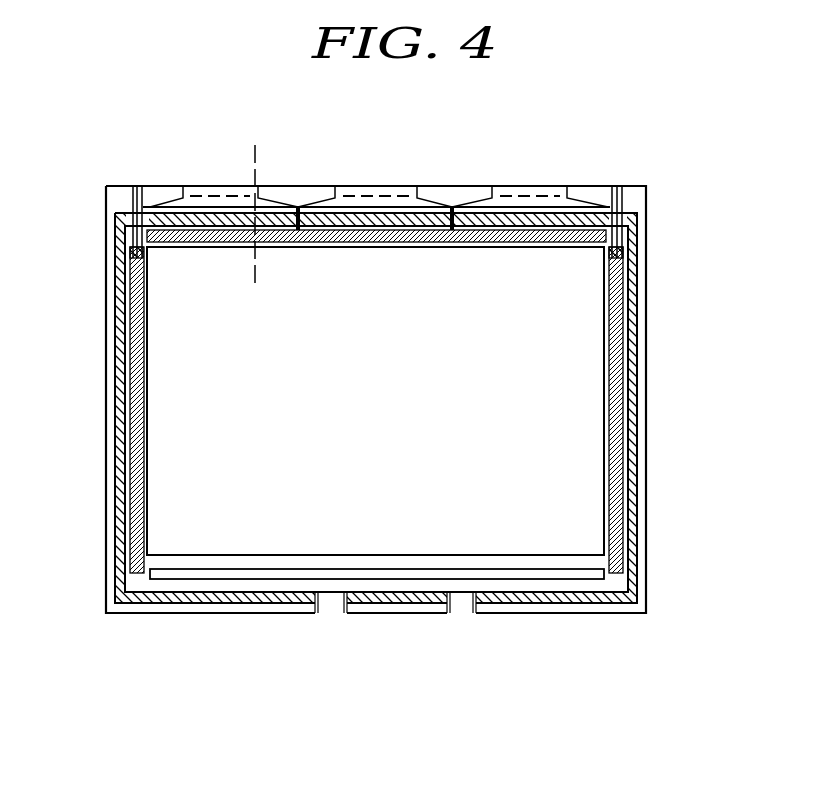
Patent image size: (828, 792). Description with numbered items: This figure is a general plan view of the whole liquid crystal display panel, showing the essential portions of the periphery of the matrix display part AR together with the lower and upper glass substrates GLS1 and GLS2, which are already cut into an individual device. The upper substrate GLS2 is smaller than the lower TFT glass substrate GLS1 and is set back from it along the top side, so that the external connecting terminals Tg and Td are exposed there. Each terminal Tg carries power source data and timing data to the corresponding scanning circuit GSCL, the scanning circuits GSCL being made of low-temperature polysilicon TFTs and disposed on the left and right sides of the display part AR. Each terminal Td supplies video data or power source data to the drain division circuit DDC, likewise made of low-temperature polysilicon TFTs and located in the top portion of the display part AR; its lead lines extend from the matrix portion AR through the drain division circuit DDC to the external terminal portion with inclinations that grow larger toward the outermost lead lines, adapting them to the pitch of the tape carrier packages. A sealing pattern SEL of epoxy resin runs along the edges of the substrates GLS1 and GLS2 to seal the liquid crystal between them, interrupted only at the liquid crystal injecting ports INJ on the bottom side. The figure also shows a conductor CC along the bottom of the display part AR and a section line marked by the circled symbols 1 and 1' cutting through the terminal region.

The lower glass substrate GLS1 is at (648, 198).
The upper glass substrate GLS2 is at (633, 212).
The sealing pattern SEL is at (117, 322).
The scanning circuit GSCL is at (133, 397).
The display part (matrix) AR is at (375, 401).
The common conductor CC is at (216, 572).
The liquid crystal injecting port INJ is at (332, 613).
The external connecting terminal (gate) Tg is at (135, 186).
The external connecting terminal (drain) Td is at (254, 186).
The drain division circuit DDC is at (441, 222).
The section line mark 1 is at (257, 186).
The section line mark 1' is at (257, 320).